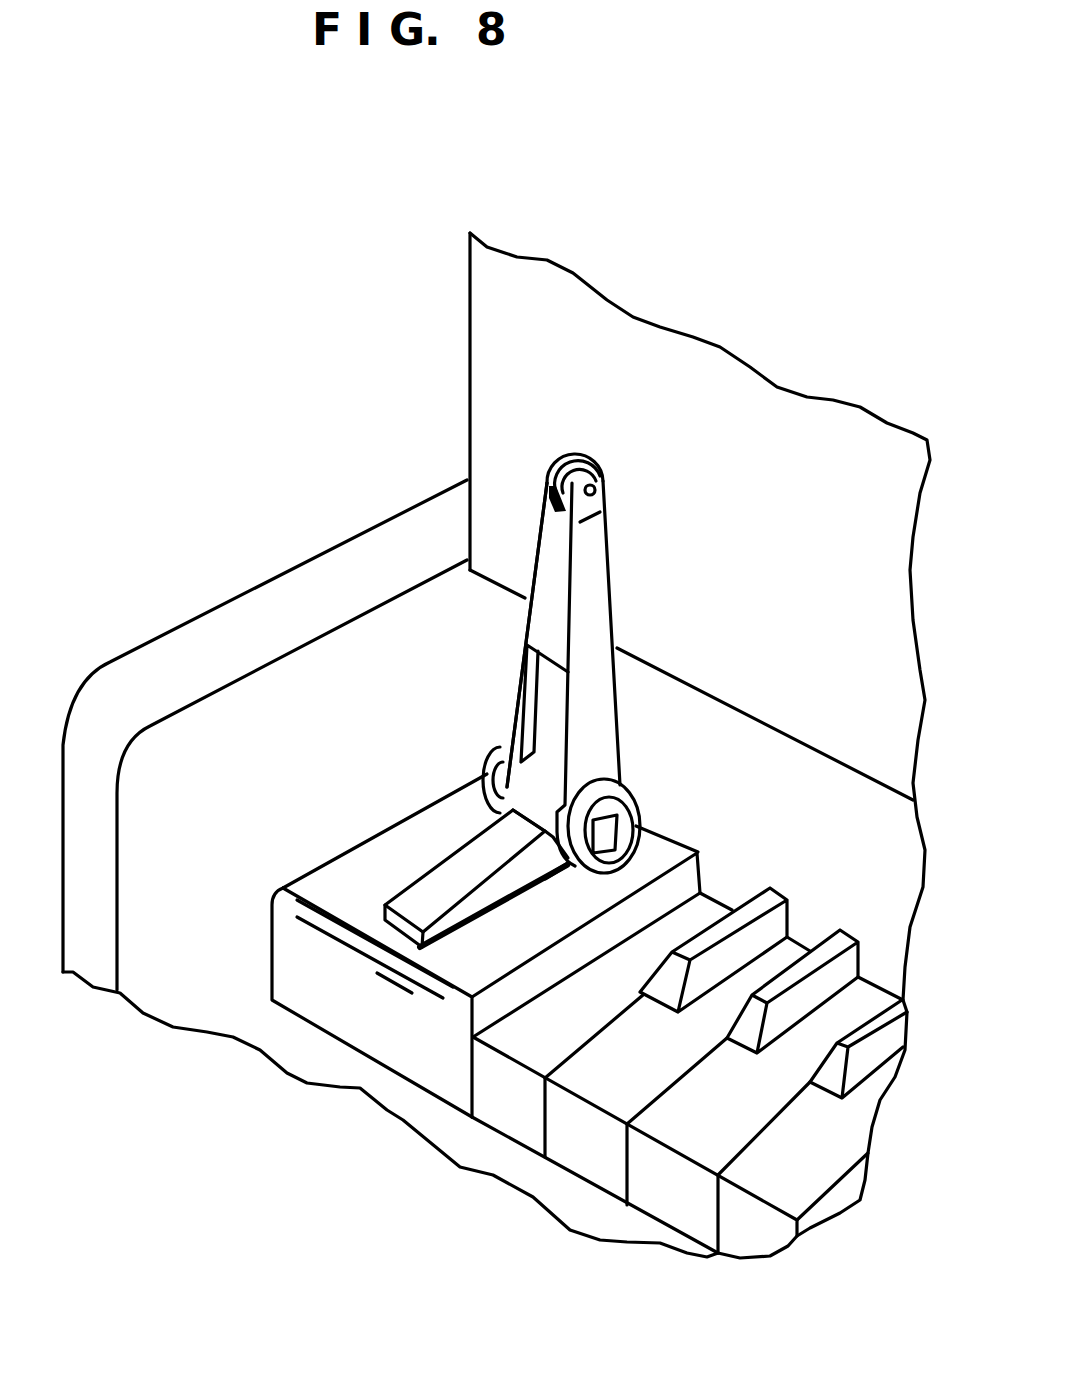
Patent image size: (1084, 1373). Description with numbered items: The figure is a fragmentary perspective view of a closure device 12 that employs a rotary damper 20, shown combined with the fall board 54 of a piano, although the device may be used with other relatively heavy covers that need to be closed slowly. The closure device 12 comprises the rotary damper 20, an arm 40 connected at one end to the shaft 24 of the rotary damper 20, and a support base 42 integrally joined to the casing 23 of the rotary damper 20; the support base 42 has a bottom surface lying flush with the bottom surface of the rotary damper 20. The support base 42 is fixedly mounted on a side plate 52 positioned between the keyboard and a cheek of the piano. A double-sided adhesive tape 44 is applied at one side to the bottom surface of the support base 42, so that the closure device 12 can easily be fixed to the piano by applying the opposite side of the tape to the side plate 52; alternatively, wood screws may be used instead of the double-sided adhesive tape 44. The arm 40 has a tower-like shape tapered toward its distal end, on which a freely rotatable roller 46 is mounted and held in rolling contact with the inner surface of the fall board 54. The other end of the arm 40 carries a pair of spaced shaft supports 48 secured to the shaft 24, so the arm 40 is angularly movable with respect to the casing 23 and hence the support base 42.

The closure device 12 is at (503, 704).
The rotary damper 20 is at (485, 802).
The casing 23 is at (546, 878).
The shaft 24 is at (700, 868).
The arm 40 is at (602, 613).
The support base 42 is at (447, 880).
The double-sided adhesive tape 44 is at (465, 917).
The roller 46 is at (575, 460).
The shaft supports 48 is at (495, 750).
The side plate 52 is at (333, 877).
The fall board 54 is at (482, 322).